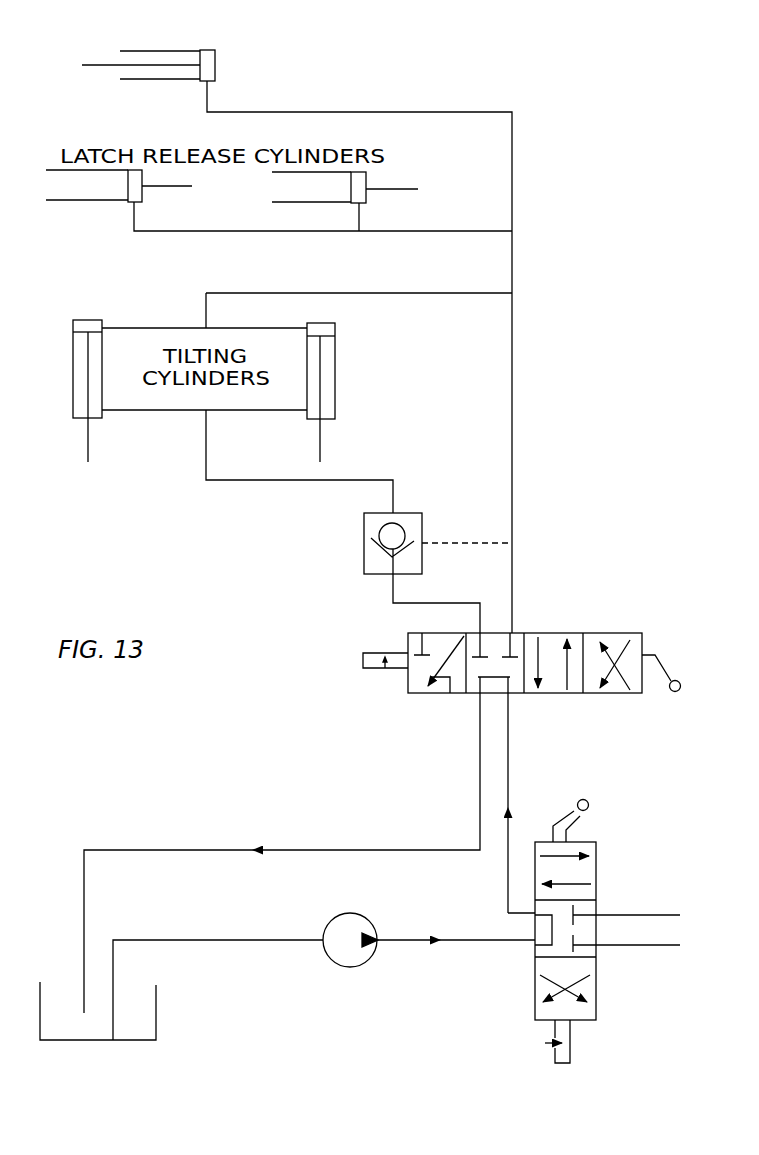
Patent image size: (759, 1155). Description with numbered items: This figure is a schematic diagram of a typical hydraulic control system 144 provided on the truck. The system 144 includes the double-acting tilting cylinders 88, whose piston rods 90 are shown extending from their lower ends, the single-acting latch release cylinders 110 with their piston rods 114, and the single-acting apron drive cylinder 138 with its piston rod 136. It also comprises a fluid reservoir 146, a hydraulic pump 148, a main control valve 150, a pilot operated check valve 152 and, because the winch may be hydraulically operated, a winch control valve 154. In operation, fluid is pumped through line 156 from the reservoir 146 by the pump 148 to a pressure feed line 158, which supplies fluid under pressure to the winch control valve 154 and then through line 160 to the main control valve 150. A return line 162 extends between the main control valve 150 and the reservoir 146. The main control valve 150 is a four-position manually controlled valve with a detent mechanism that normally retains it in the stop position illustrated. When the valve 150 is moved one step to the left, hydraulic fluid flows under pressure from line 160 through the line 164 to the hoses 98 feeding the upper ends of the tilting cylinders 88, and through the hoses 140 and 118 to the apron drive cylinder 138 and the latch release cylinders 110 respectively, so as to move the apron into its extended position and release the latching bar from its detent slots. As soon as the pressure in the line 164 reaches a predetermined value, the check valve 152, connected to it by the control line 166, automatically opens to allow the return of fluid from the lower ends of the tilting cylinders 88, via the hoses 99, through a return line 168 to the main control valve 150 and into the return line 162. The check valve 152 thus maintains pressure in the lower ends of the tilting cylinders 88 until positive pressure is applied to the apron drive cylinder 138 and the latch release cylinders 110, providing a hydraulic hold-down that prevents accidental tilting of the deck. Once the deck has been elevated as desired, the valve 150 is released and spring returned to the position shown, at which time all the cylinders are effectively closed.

The piston rod 136 is at (103, 66).
The apron drive cylinder 138 is at (150, 50).
The hose 140 is at (383, 112).
The latch release cylinders 110 is at (98, 203).
The piston rods 114 is at (165, 187).
The hoses 118 is at (298, 235).
The tilting cylinders 88 is at (73, 343).
The tilting cylinder piston rods 90 is at (88, 442).
The hoses 98 is at (125, 326).
The hoses 99 is at (173, 412).
The hydraulic control system 144 is at (558, 467).
The fluid reservoir 146 is at (157, 997).
The hydraulic pump 148 is at (348, 912).
The main control valve 150 is at (617, 696).
The pilot operated check valve 152 is at (368, 575).
The winch control valve 154 is at (597, 877).
The line 156 is at (162, 938).
The pressure feed line 158 is at (405, 938).
The line 160 is at (512, 780).
The return line 162 is at (177, 849).
The line 164 is at (512, 373).
The control line 166 is at (453, 543).
The return line 168 is at (427, 601).